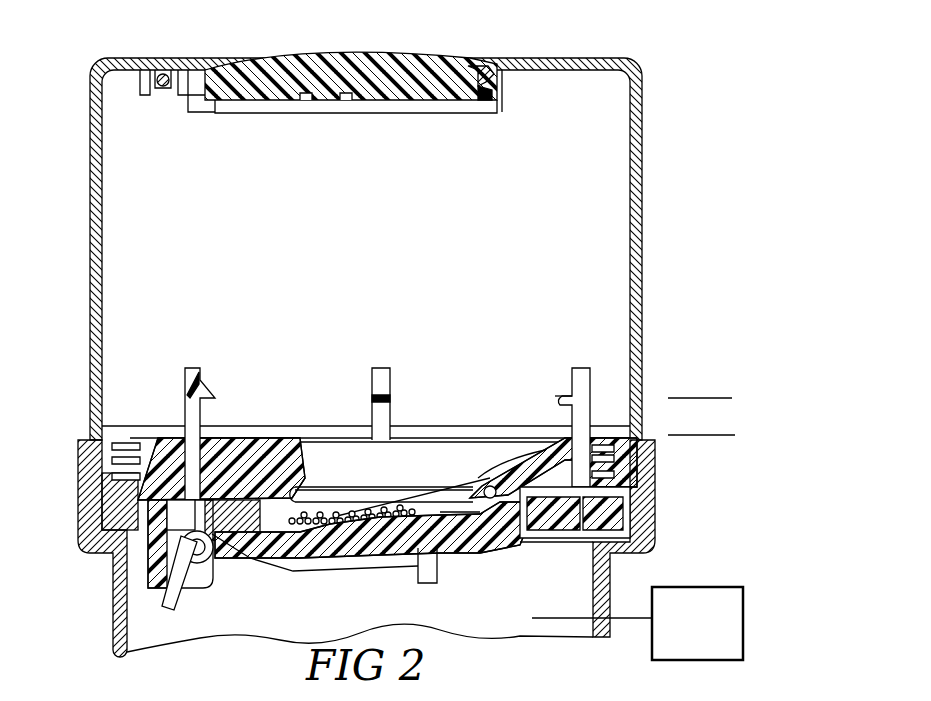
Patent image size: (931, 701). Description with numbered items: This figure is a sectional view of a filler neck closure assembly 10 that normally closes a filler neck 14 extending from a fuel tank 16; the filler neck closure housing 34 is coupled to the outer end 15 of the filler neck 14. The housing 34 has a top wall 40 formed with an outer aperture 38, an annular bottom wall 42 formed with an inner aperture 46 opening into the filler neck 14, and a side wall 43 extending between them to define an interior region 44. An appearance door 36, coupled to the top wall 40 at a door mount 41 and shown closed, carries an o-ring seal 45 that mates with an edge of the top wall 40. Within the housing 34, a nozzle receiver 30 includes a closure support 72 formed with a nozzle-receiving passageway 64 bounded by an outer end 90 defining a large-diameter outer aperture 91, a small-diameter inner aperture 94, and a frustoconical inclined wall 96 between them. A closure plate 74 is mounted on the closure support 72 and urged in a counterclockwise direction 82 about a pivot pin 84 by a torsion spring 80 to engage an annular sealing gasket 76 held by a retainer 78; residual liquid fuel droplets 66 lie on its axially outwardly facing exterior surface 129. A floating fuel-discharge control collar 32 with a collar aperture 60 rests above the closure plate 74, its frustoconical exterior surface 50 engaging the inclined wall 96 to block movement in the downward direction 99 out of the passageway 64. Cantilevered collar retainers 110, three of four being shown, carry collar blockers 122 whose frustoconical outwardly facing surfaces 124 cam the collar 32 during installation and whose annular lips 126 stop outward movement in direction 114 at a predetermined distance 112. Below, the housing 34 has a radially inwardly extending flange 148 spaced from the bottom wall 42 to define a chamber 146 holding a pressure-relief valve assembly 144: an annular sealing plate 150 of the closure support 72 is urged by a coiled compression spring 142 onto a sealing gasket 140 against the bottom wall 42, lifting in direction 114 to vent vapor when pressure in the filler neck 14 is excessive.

The filler neck closure assembly 10 is at (650, 350).
The filler neck 14 is at (113, 620).
The outer end of filler neck 15 is at (656, 478).
The fuel tank 16 is at (690, 588).
The nozzle receiver 30 is at (163, 424).
The fuel-discharge control collar 32 is at (258, 456).
The filler neck closure housing 34 is at (650, 150).
The appearance door 36 is at (434, 48).
The outer aperture 38 is at (470, 66).
The top wall 40 is at (548, 60).
The door mount 41 is at (155, 116).
The bottom wall 42 is at (582, 540).
The side wall 43 is at (95, 208).
The interior region 44 is at (124, 178).
The o-ring seal 45 is at (498, 86).
The inner aperture 46 is at (562, 548).
The frustoconical exterior surface 50 is at (490, 486).
The collar aperture 60 is at (294, 488).
The nozzle-receiving passageway 64 is at (434, 454).
The liquid fuel droplets 66 is at (368, 506).
The closure support 72 is at (152, 452).
The closure plate 74 is at (472, 556).
The annular sealing gasket 76 is at (552, 540).
The retainer 78 is at (96, 548).
The torsion spring 80 is at (283, 578).
The counterclockwise direction 82 is at (370, 614).
The pivot pin 84 is at (196, 565).
The outer end of closure support 90 is at (576, 452).
The large-diameter outer aperture 91 is at (154, 484).
The small-diameter inner aperture 94 is at (340, 494).
The frustoconical inclined wall 96 is at (268, 468).
The downward direction 99 is at (307, 472).
The cantilevered collar retainers 110 is at (190, 366).
The predetermined distance 112 is at (710, 460).
The axially outward direction 114 is at (430, 442).
The collar blocker 122 is at (545, 386).
The frustoconical outwardly facing surface 124 is at (565, 392).
The annular lip 126 is at (562, 400).
The axially outwardly facing exterior surface 129 is at (456, 512).
The sealing gasket 140 is at (656, 532).
The spring 142 is at (638, 448).
The pressure-relief valve assembly 144 is at (110, 466).
The chamber 146 is at (656, 456).
The radially inwardly extending flange 148 is at (606, 434).
The annular sealing plate 150 is at (656, 498).